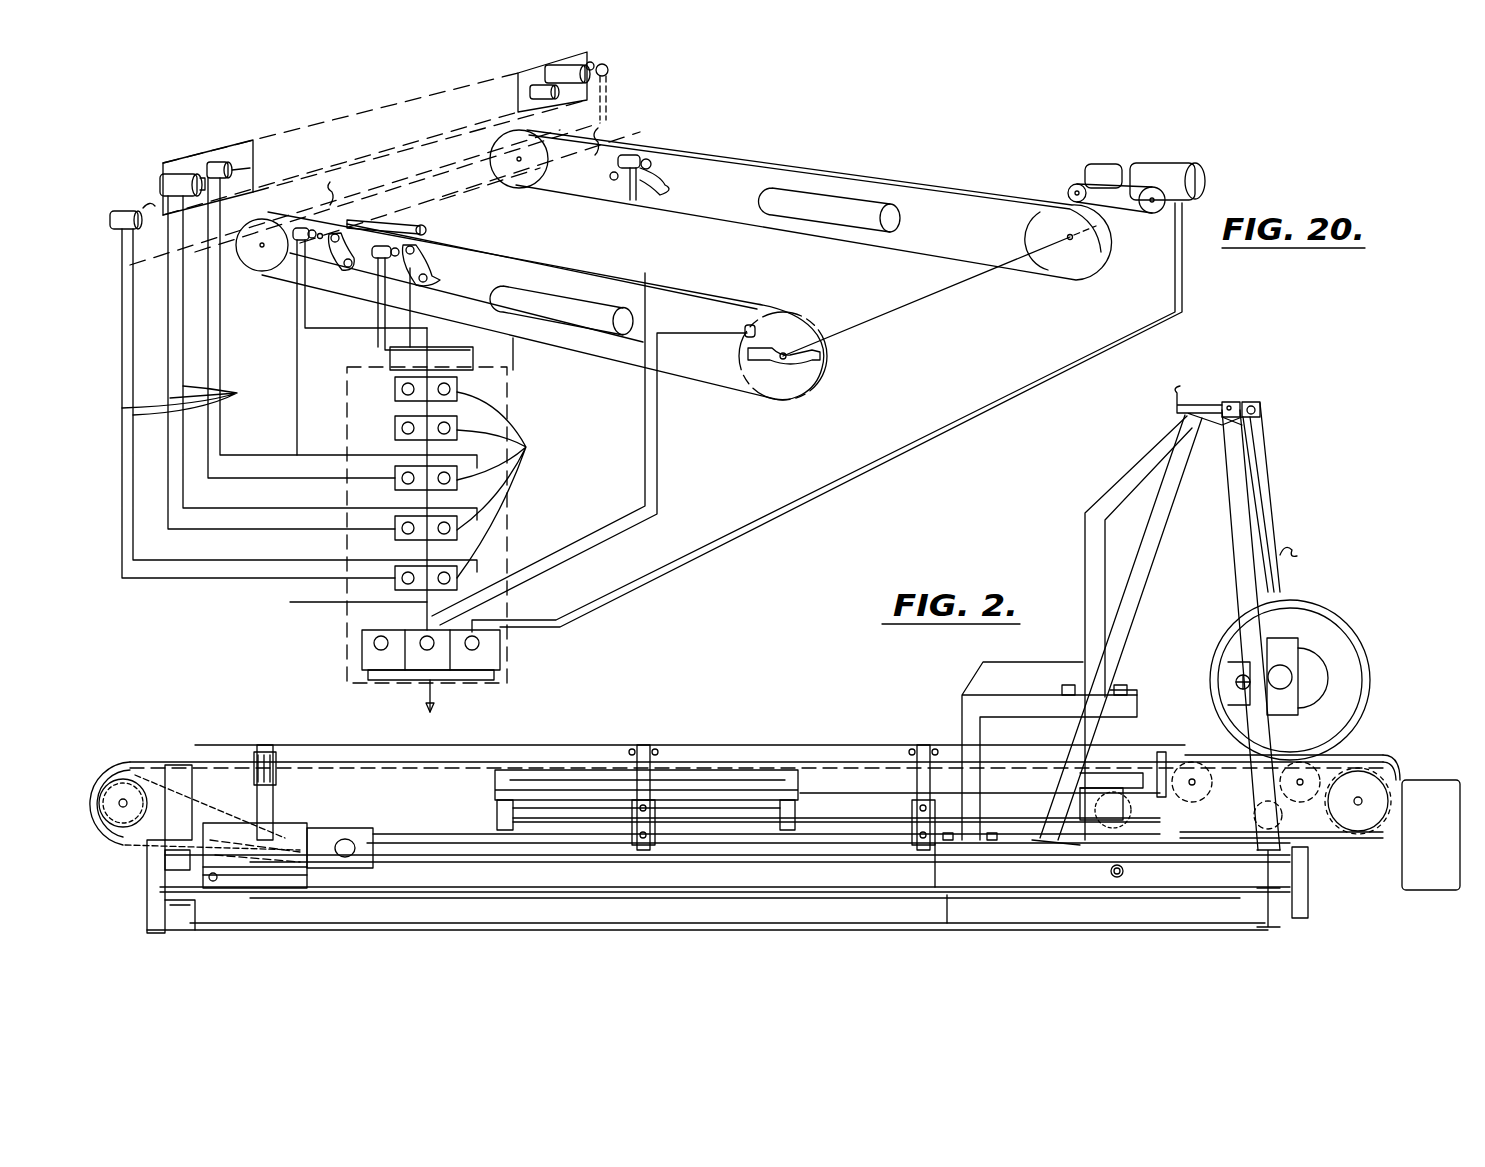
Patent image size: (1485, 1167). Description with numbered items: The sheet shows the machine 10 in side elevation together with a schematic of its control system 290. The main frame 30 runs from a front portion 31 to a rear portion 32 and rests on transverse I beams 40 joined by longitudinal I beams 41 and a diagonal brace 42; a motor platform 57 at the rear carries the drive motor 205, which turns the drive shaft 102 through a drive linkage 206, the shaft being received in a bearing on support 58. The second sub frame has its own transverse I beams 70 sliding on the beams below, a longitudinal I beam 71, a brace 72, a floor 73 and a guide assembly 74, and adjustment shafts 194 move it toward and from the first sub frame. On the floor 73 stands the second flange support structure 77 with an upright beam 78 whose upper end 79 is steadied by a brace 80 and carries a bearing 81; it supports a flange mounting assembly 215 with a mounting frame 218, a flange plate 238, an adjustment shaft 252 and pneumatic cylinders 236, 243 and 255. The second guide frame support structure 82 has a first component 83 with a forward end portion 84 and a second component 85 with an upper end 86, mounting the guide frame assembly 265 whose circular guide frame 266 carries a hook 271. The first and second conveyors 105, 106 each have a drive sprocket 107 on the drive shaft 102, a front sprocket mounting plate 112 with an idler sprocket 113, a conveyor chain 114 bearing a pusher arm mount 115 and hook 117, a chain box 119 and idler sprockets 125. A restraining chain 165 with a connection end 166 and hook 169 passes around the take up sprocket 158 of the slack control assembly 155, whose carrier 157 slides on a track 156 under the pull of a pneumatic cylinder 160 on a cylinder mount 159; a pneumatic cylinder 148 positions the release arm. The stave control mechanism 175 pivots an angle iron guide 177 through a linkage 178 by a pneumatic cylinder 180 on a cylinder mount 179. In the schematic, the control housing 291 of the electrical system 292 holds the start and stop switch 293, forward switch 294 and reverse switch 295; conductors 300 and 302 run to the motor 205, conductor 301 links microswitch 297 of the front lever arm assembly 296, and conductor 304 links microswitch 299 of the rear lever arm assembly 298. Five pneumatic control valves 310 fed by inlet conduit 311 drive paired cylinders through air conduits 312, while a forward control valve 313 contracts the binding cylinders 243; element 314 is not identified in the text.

In FIG. 2, the machine 10 is at (830, 742).
In FIG. 2, the main frame 30 is at (712, 932).
In FIG. 2, the front portion 31 is at (1385, 752).
In FIG. 2, the rear portion 32 is at (130, 755).
In FIG. 2, the transverse I beams 40 is at (180, 932).
In FIG. 2, the longitudinal I beams 41 is at (555, 910).
In FIG. 2, the brace 42 is at (1105, 912).
In FIG. 2, the motor platform 57 is at (313, 892).
In FIG. 2, the support 58 is at (147, 858).
In FIG. 2, the transverse I beams 70 is at (165, 862).
In FIG. 2, the longitudinal I beam 71 is at (790, 870).
In FIG. 2, the brace 72 is at (1017, 870).
In FIG. 2, the floor 73 is at (1178, 845).
In FIG. 2, the guide assembly 74 is at (165, 900).
In FIG. 2, the second flange support structure 77 is at (1258, 492).
In FIG. 2, the upright beam 78 is at (1240, 560).
In FIG. 2, the upper end 79 is at (1250, 418).
In FIG. 2, the brace 80 is at (1130, 618).
In FIG. 2, the bearing 81 is at (1258, 400).
In FIG. 2, the second guide frame support structure 82 is at (1135, 472).
In FIG. 2, the first component 83 is at (962, 700).
In FIG. 2, the forward end portion 84 is at (1137, 702).
In FIG. 2, the second component 85 is at (1085, 592).
In FIG. 2, the upper end 86 is at (1210, 398).
In FIG. 20, the drive shaft 102 is at (940, 290).
In FIG. 20, the first conveyor 105 is at (548, 262).
In FIG. 20, the second conveyor 106 is at (832, 165).
In FIG. 2, the second conveyor 106 is at (742, 745).
In FIG. 20, the drive sprocket 107 is at (736, 368).
In FIG. 2, the front sprocket mounting plate 112 is at (1205, 775).
In FIG. 20, the conveyor idler sprocket 113 is at (520, 168).
In FIG. 2, the conveyor idler sprocket 113 is at (1360, 832).
In FIG. 20, the conveyor chain 114 is at (605, 350).
In FIG. 20, the pusher arm mount 115 is at (972, 185).
In FIG. 20, the hook 117 is at (984, 182).
In FIG. 2, the hook 117 is at (365, 745).
In FIG. 2, the chain box 119 is at (1428, 882).
In FIG. 2, the idler sprockets 125 is at (1205, 782).
In FIG. 20, the pneumatic cylinder 148 is at (634, 158).
In FIG. 20, the slack control assembly 155 is at (698, 175).
In FIG. 2, the slack control assembly 155 is at (1070, 790).
In FIG. 2, the track 156 is at (995, 740).
In FIG. 2, the carrier 157 is at (1120, 778).
In FIG. 2, the take up sprocket 158 is at (1125, 815).
In FIG. 2, the cylinder mount 159 is at (597, 790).
In FIG. 20, the pneumatic cylinder 160 is at (850, 230).
In FIG. 2, the pneumatic cylinder 160 is at (688, 813).
In FIG. 20, the restraining chain 165 is at (914, 185).
In FIG. 2, the restraining chain 165 is at (1160, 752).
In FIG. 20, the connection end 166 is at (1098, 248).
In FIG. 20, the hook 169 is at (600, 128).
In FIG. 2, the hook 169 is at (1308, 750).
In FIG. 2, the stave control mechanism 175 is at (258, 748).
In FIG. 2, the angle iron guide 177 is at (270, 745).
In FIG. 2, the linkage 178 is at (638, 750).
In FIG. 2, the cylinder mount 179 is at (648, 848).
In FIG. 2, the pneumatic cylinder 180 is at (632, 818).
In FIG. 2, the adjustment shafts 194 is at (213, 880).
In FIG. 20, the drive motor 205 is at (1165, 165).
In FIG. 2, the drive motor 205 is at (285, 830).
In FIG. 20, the drive linkage 206 is at (1118, 165).
In FIG. 2, the drive linkage 206 is at (180, 770).
In FIG. 2, the flange mounting assembly 215 is at (1300, 638).
In FIG. 2, the mounting frame 218 is at (1225, 660).
In FIG. 20, the pneumatic cylinder 236 is at (540, 68).
In FIG. 2, the flange plate 238 is at (1312, 670).
In FIG. 20, the pneumatic cylinder 243 is at (530, 92).
In FIG. 2, the adjustment shaft 252 is at (1318, 688).
In FIG. 20, the pneumatic cylinder 255 is at (612, 70).
In FIG. 2, the pneumatic cylinder 255 is at (1235, 684).
In FIG. 2, the guide frame assembly 265 is at (1292, 585).
In FIG. 2, the guide frame 266 is at (1372, 670).
In FIG. 2, the hook 271 is at (1298, 552).
In FIG. 20, the control system 290 is at (580, 628).
In FIG. 20, the control housing 291 is at (510, 492).
In FIG. 20, the electrical system 292 is at (725, 560).
In FIG. 20, the start and stop switch 293 is at (448, 688).
In FIG. 20, the forward switch 294 is at (362, 657).
In FIG. 20, the reverse switch 295 is at (500, 657).
In FIG. 20, the front lever arm assembly 296 is at (440, 215).
In FIG. 20, the microswitch 297 is at (448, 218).
In FIG. 20, the rear lever arm assembly 298 is at (786, 385).
In FIG. 20, the microswitch 299 is at (748, 330).
In FIG. 20, the electrical conductor 300 is at (890, 450).
In FIG. 20, the electrical conductor 301 is at (645, 432).
In FIG. 20, the electrical conductor 302 is at (895, 470).
In FIG. 20, the electrical conductor 304 is at (660, 440).
In FIG. 20, the pneumatic control valves 310 is at (481, 483).
In FIG. 20, the inlet conduit 311 is at (327, 615).
In FIG. 20, the air conduits 312 is at (201, 395).
In FIG. 20, the forward control valve 313 is at (300, 228).
In FIG. 20, the wire 314 is at (298, 318).